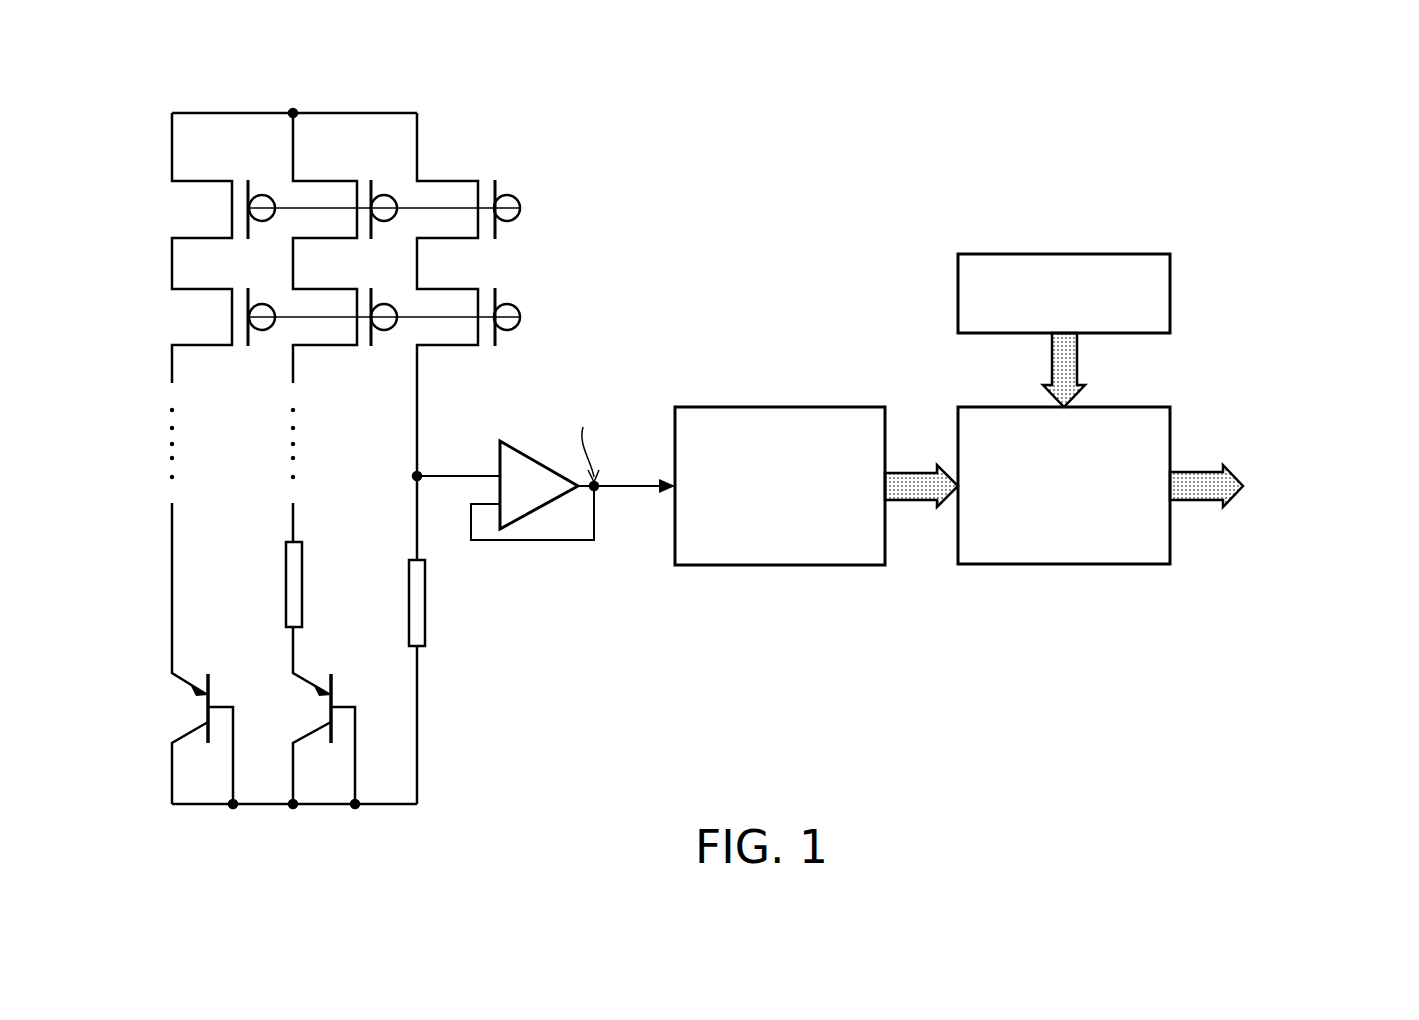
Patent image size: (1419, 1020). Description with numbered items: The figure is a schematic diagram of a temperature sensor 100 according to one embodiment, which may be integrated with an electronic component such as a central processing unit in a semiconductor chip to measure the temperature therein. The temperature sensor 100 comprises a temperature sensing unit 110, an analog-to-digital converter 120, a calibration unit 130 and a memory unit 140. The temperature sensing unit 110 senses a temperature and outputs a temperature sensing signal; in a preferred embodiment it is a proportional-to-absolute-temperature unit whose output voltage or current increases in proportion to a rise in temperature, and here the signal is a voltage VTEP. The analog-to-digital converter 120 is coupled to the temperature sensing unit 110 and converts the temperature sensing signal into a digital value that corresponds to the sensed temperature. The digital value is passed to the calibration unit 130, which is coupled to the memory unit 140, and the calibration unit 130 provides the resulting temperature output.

The temperature sensor 100 is at (751, 109).
The temperature sensing unit 110 is at (477, 160).
The analog-to-digital converter (ADC) 120 is at (778, 406).
The calibration unit 130 is at (1064, 565).
The memory unit 140 is at (1062, 253).